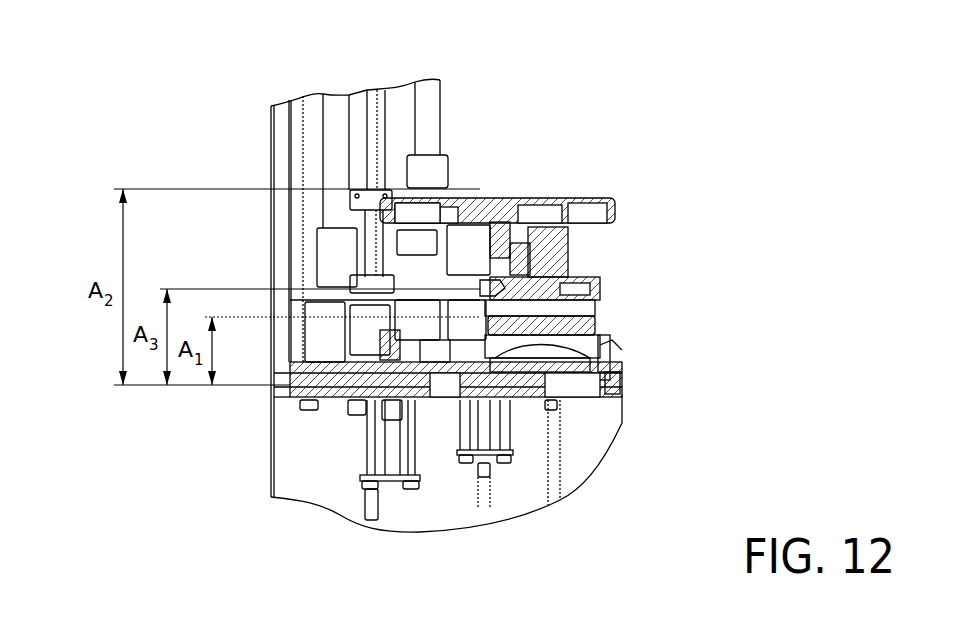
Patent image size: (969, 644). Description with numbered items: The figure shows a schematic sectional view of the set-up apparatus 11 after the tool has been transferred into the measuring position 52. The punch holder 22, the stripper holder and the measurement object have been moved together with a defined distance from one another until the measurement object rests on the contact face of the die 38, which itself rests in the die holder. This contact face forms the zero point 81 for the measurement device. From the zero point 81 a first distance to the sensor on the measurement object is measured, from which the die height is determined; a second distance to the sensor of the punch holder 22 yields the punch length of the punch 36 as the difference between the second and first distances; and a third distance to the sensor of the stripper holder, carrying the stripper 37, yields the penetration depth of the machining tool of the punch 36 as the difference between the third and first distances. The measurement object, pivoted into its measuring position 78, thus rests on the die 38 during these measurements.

The set-up apparatus 11 is at (510, 110).
The punch holder 22 is at (575, 198).
The punch 36 is at (586, 263).
The stripper 37 is at (600, 292).
The measuring position 52 is at (605, 309).
The die 38 is at (600, 328).
The measuring position 78 is at (692, 312).
The zero point 81 is at (118, 383).